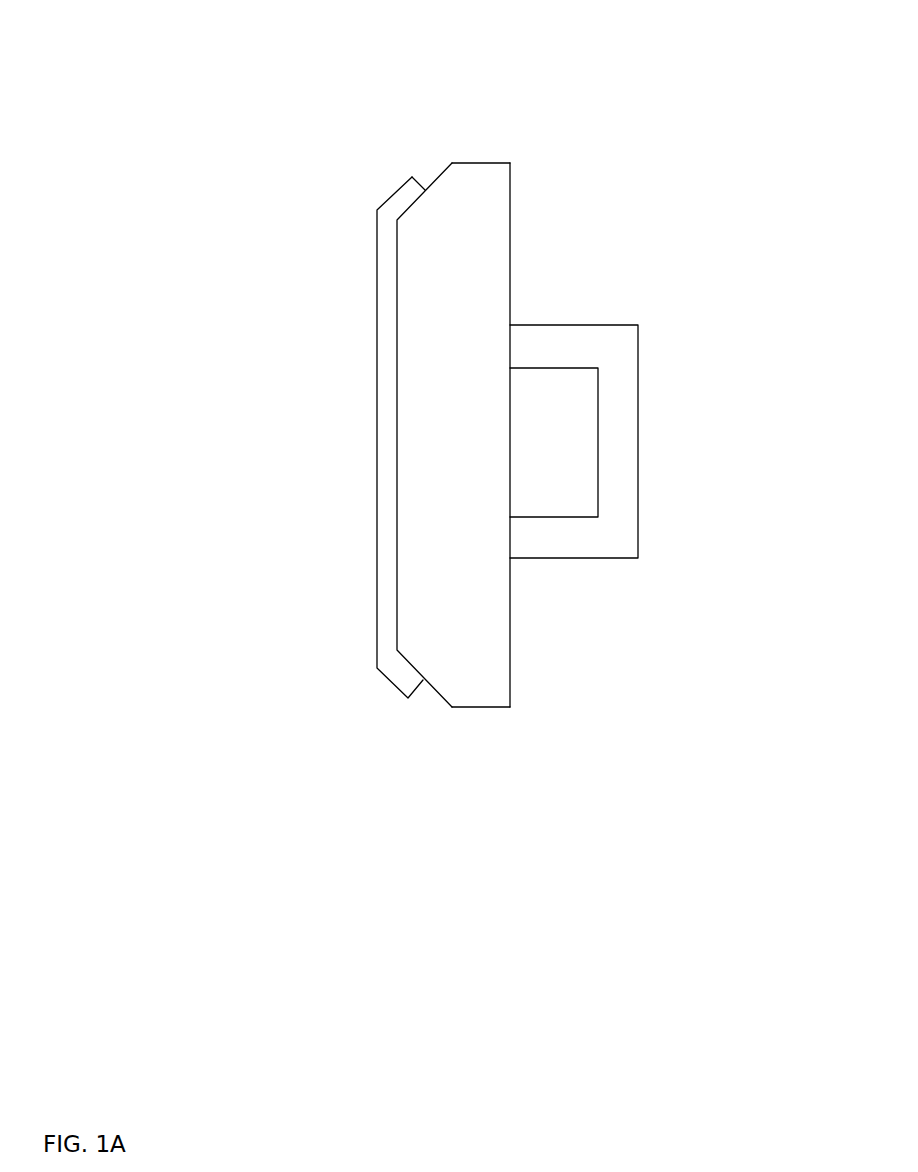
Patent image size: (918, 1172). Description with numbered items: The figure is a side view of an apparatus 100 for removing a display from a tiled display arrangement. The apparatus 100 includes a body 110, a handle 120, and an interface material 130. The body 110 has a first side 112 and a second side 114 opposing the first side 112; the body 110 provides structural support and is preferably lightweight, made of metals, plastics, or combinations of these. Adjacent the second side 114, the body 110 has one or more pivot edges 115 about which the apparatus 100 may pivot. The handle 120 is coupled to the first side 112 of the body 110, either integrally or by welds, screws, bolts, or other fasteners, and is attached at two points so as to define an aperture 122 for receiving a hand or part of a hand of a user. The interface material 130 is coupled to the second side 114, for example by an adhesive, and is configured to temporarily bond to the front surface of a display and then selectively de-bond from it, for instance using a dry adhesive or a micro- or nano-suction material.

The apparatus 100 is at (230, 69).
The body 110 is at (472, 222).
The first side 112 is at (512, 277).
The second side 114 is at (396, 272).
The pivot edge 115 is at (407, 208).
The handle 120 is at (623, 387).
The aperture 122 is at (567, 480).
The interface material 130 is at (387, 393).